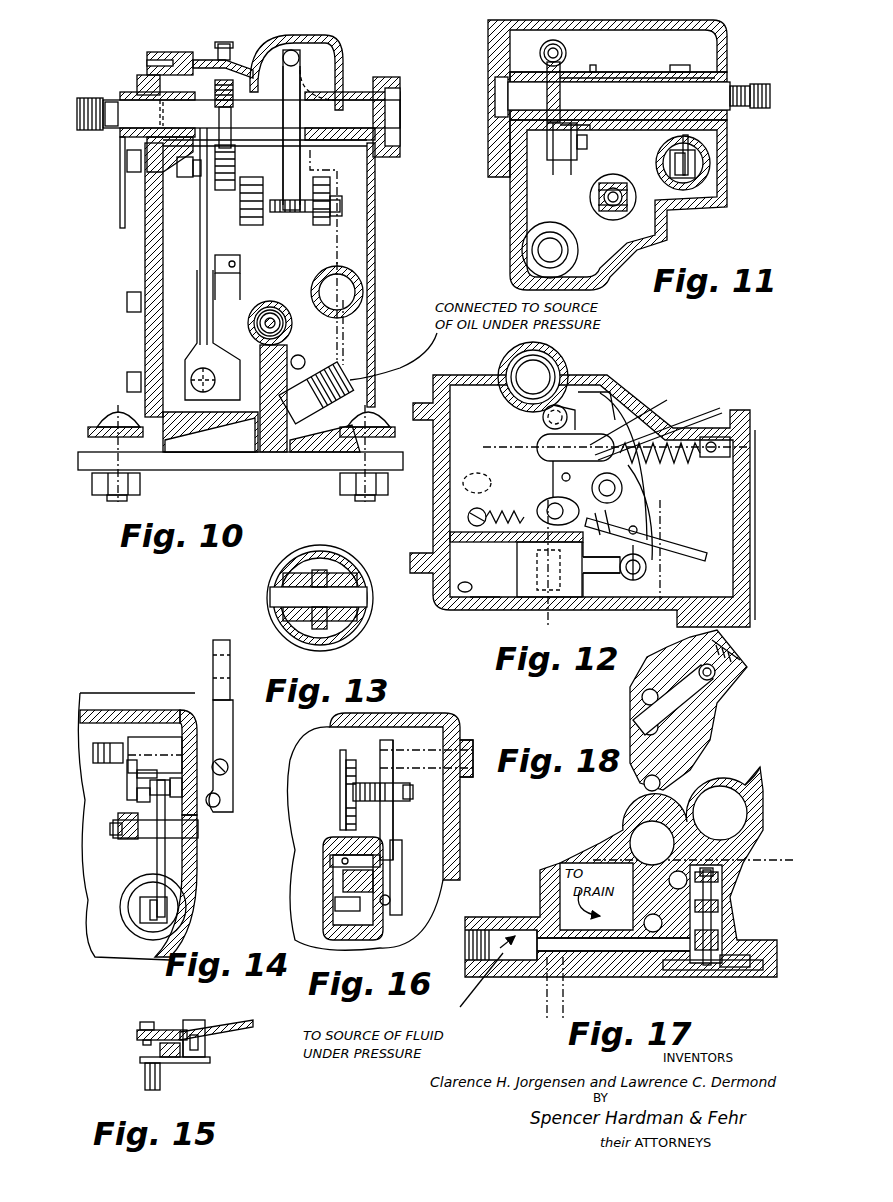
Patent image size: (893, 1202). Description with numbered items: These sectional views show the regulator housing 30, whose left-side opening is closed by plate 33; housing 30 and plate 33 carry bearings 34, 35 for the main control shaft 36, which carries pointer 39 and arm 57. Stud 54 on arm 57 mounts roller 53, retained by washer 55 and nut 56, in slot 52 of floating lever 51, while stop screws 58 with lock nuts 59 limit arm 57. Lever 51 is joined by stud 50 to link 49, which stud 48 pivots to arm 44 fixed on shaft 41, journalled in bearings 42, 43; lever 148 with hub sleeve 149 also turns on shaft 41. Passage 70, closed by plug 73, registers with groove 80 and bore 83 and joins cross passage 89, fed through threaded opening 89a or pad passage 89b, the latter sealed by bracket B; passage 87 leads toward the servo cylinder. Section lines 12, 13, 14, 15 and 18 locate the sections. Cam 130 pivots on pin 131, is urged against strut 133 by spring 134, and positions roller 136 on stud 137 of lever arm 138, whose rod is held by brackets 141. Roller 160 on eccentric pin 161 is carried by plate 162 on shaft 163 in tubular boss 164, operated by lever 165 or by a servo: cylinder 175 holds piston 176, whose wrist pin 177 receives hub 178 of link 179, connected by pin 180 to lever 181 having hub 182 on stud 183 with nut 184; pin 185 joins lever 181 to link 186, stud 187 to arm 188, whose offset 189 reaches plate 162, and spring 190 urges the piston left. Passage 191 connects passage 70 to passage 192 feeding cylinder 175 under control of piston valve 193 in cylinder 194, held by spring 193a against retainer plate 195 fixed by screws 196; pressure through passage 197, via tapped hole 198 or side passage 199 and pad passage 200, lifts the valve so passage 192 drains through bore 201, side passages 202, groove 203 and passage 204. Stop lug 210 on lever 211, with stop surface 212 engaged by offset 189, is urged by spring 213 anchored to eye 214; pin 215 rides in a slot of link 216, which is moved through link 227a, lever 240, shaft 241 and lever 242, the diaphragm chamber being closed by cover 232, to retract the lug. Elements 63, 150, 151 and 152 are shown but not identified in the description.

In FIG. 10, the regulator housing 30 is at (355, 52).
In FIG. 11, the regulator housing 30 is at (727, 36).
In FIG. 12, the regulator housing 30 is at (470, 375).
In FIG. 14, the regulator housing 30 is at (197, 868).
In FIG. 16, the regulator housing 30 is at (455, 818).
In FIG. 17, the regulator housing 30 is at (777, 952).
In FIG. 10, the plate 33 is at (147, 58).
In FIG. 11, the plate 33 is at (495, 58).
In FIG. 10, the bearing 34 is at (385, 85).
In FIG. 10, the bearing 35 is at (140, 86).
In FIG. 10, the main control shaft 36 is at (106, 118).
In FIG. 10, the pointer 39 is at (120, 222).
In FIG. 11, the shaft 41 is at (772, 96).
In FIG. 11, the bearing 42 is at (690, 70).
In FIG. 11, the bearing 43 is at (528, 122).
In FIG. 11, the arm 44 is at (547, 150).
In FIG. 11, the stud 48 is at (588, 142).
In FIG. 10, the link 49 is at (230, 290).
In FIG. 11, the link 49 is at (567, 160).
In FIG. 10, the stud 50 is at (238, 266).
In FIG. 10, the floating lever 51 is at (207, 240).
In FIG. 10, the slot 52 is at (200, 220).
In FIG. 10, the roller 53 is at (213, 192).
In FIG. 10, the stud 54 is at (233, 160).
In FIG. 10, the washer 55 is at (200, 190).
In FIG. 10, the nut 56 is at (190, 172).
In FIG. 10, the arm 57 is at (233, 95).
In FIG. 10, the stop screws 58 is at (226, 42).
In FIG. 10, the lock nuts 59 is at (236, 62).
In FIG. 11, the boss 63 is at (525, 250).
In FIG. 10, the passage 70 is at (305, 360).
In FIG. 18, the passage 70 is at (703, 743).
In FIG. 10, the plugs 73 is at (262, 452).
In FIG. 10, the annular groove 80 is at (275, 305).
In FIG. 10, the internal bore 83 is at (290, 323).
In FIG. 11, the internal bore 83 is at (637, 200).
In FIG. 10, the passage 87 is at (290, 350).
In FIG. 10, the cross passage 89 is at (225, 432).
In FIG. 10, the threaded opening 89a is at (347, 383).
In FIG. 10, the passage 89b is at (182, 452).
In FIG. 10, the bracket B is at (78, 461).
In FIG. 10, the section line 12— 12 is at (310, 155).
In FIG. 12, the section line 13— 13 is at (548, 518).
In FIG. 12, the section line 14— 14 is at (635, 412).
In FIG. 12, the section line 15— 15 is at (487, 445).
In FIG. 17, the section line 18— 18 is at (600, 857).
In FIG. 10, the pressure selecting cam 130 is at (298, 55).
In FIG. 10, the pin 131 is at (283, 100).
In FIG. 10, the strut 133 is at (332, 46).
In FIG. 10, the spring 134 is at (290, 48).
In FIG. 10, the cam follower roller 136 is at (318, 223).
In FIG. 16, the cam follower roller 136 is at (370, 783).
In FIG. 10, the stud 137 is at (335, 205).
In FIG. 16, the stud 137 is at (410, 795).
In FIG. 10, the lever arm 138 is at (258, 223).
In FIG. 16, the lever arm 138 is at (350, 750).
In FIG. 16, the brackets 141 is at (340, 772).
In FIG. 11, the lever 148 is at (593, 72).
In FIG. 11, the hub sleeve 149 is at (628, 74).
In FIG. 11, the passage 150 is at (590, 120).
In FIG. 11, the passage 151 is at (612, 210).
In FIG. 11, the passage 152 is at (625, 210).
In FIG. 12, the roller 160 is at (545, 413).
In FIG. 14, the roller 160 is at (103, 743).
In FIG. 15, the roller 160 is at (145, 1071).
In FIG. 14, the pin 161 is at (112, 745).
In FIG. 15, the pin 161 is at (148, 1088).
In FIG. 12, the plate 162 is at (570, 375).
In FIG. 14, the plate 162 is at (155, 740).
In FIG. 15, the plate 162 is at (205, 1063).
In FIG. 14, the shaft 163 is at (222, 700).
In FIG. 16, the shaft 163 is at (386, 755).
In FIG. 14, the tubular boss 164 is at (215, 745).
In FIG. 16, the tubular boss 164 is at (430, 740).
In FIG. 14, the lever 165 is at (230, 650).
In FIG. 10, the cylinder 175 is at (362, 283).
In FIG. 12, the cylinder 175 is at (483, 602).
In FIG. 17, the cylinder 175 is at (742, 808).
In FIG. 10, the piston 176 is at (362, 300).
In FIG. 11, the piston 176 is at (690, 192).
In FIG. 12, the piston 176 is at (583, 585).
In FIG. 13, the piston 176 is at (268, 572).
In FIG. 14, the piston 176 is at (128, 925).
In FIG. 12, the wrist pin 177 is at (535, 566).
In FIG. 13, the wrist pin 177 is at (276, 598).
In FIG. 13, the hub 178 is at (312, 572).
In FIG. 11, the link 179 is at (683, 140).
In FIG. 12, the link 179 is at (636, 580).
In FIG. 13, the link 179 is at (328, 575).
In FIG. 14, the link 179 is at (150, 905).
In FIG. 11, the pin 180 is at (702, 163).
In FIG. 12, the pin 180 is at (645, 563).
In FIG. 14, the pin 180 is at (170, 912).
In FIG. 11, the lever 181 is at (700, 150).
In FIG. 12, the lever 181 is at (657, 525).
In FIG. 14, the lever 181 is at (157, 861).
In FIG. 15, the lever 181 is at (238, 1028).
In FIG. 12, the hub 182 is at (623, 489).
In FIG. 14, the hub 182 is at (118, 838).
In FIG. 14, the stud 183 is at (195, 830).
In FIG. 14, the self-locking nut 184 is at (122, 822).
In FIG. 12, the pin 185 is at (690, 415).
In FIG. 14, the pin 185 is at (185, 789).
In FIG. 15, the pin 185 is at (205, 1022).
In FIG. 12, the link 186 is at (545, 440).
In FIG. 14, the link 186 is at (145, 786).
In FIG. 15, the link 186 is at (168, 1030).
In FIG. 12, the stud 187 is at (478, 483).
In FIG. 15, the stud 187 is at (141, 1026).
In FIG. 12, the arm 188 is at (622, 380).
In FIG. 14, the arm 188 is at (127, 775).
In FIG. 15, the arm 188 is at (140, 1037).
In FIG. 12, the offset portion 189 is at (640, 425).
In FIG. 14, the offset portion 189 is at (137, 793).
In FIG. 15, the offset portion 189 is at (205, 1057).
In FIG. 12, the spring 190 is at (512, 512).
In FIG. 18, the passage 191 is at (690, 712).
In FIG. 17, the passage 191 is at (710, 850).
In FIG. 12, the passage 192 is at (462, 598).
In FIG. 18, the passage 192 is at (695, 648).
In FIG. 17, the passage 192 is at (720, 805).
In FIG. 18, the piston valve 193 is at (715, 673).
In FIG. 17, the piston valve 193 is at (720, 908).
In FIG. 17, the spring 193a is at (735, 900).
In FIG. 17, the cylinder 194 is at (725, 935).
In FIG. 17, the retainer plate 195 is at (720, 970).
In FIG. 17, the screws 196 is at (676, 969).
In FIG. 17, the passage 197 is at (592, 955).
In FIG. 17, the tapped hole 198 is at (490, 944).
In FIG. 17, the side passage 199 is at (545, 975).
In FIG. 17, the passage 200 is at (545, 1002).
In FIG. 17, the central bore 201 is at (725, 885).
In FIG. 17, the side passages 202 is at (722, 920).
In FIG. 17, the groove 203 is at (663, 935).
In FIG. 17, the passage 204 is at (640, 906).
In FIG. 12, the stop lug 210 is at (537, 455).
In FIG. 12, the lever 211 is at (550, 482).
In FIG. 16, the lever 211 is at (395, 740).
In FIG. 15, the stop surface 212 is at (160, 1050).
In FIG. 12, the spring 213 is at (678, 462).
In FIG. 12, the eye 214 is at (730, 450).
In FIG. 12, the pin 215 is at (568, 505).
In FIG. 12, the link 216 is at (600, 535).
In FIG. 16, the link 216 is at (392, 897).
In FIG. 16, the link 227a is at (335, 925).
In FIG. 16, the cover 232 is at (325, 860).
In FIG. 16, the lever 240 is at (340, 887).
In FIG. 16, the shaft 241 is at (375, 855).
In FIG. 16, the lever 242 is at (400, 880).